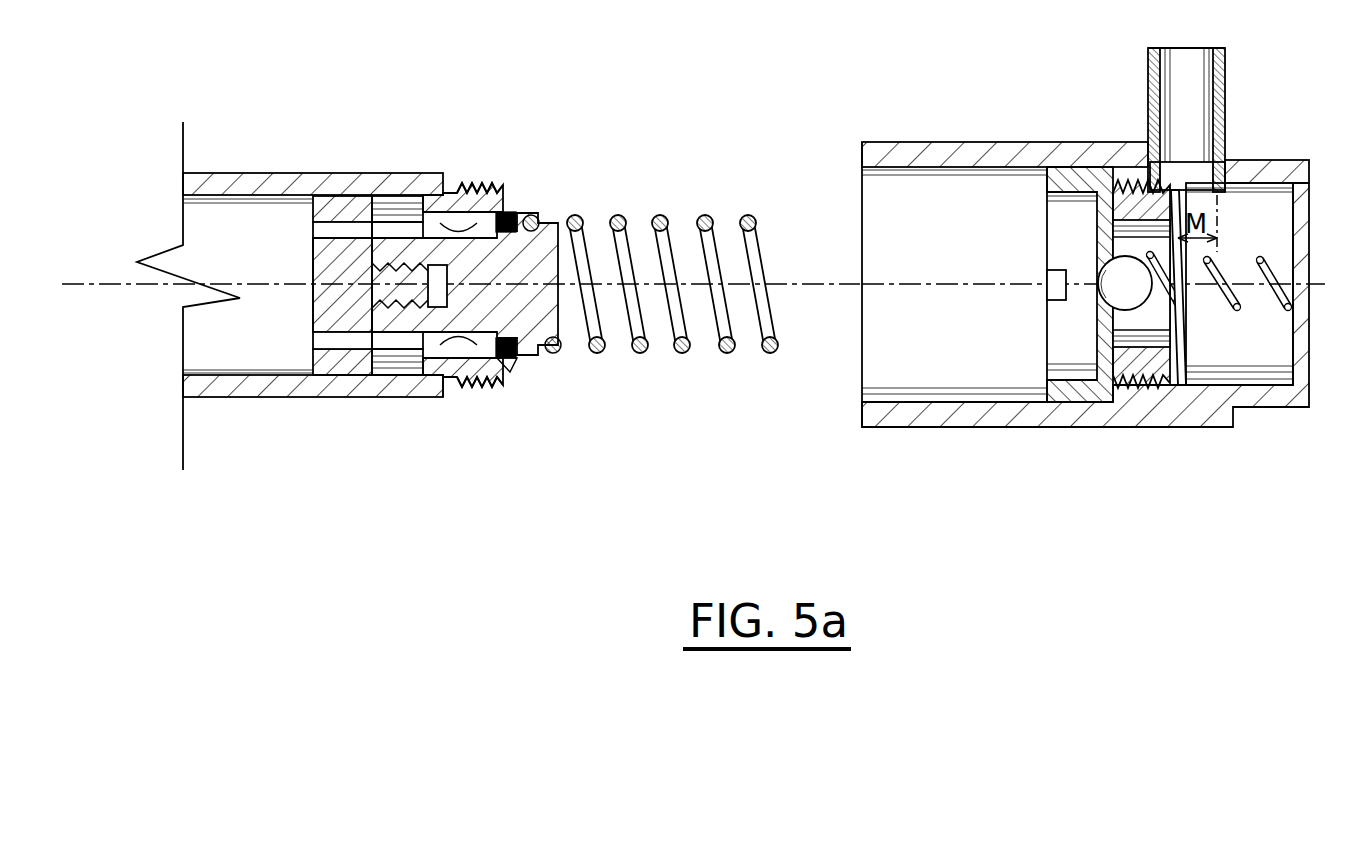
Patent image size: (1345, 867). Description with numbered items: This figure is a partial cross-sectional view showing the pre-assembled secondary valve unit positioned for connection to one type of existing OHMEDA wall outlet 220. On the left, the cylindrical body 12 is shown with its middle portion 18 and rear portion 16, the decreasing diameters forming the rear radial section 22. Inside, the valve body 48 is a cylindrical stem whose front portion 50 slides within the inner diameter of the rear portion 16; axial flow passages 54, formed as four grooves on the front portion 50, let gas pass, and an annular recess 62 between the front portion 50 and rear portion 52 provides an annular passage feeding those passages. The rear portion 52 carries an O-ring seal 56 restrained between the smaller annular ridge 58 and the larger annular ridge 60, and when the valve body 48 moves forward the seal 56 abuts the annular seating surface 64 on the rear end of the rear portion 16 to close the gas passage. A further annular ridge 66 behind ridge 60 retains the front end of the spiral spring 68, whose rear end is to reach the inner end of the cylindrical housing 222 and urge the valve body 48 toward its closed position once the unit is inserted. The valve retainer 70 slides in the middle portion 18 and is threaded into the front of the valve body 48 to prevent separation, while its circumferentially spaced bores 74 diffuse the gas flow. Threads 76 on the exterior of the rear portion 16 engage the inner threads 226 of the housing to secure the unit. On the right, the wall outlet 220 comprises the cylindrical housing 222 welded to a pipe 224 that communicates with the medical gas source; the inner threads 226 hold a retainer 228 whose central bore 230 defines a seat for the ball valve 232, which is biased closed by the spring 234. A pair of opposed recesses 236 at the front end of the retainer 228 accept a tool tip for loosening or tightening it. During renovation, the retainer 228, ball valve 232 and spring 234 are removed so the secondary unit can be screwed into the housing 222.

The cylindrical body 12 is at (211, 168).
The middle portion 18 is at (278, 173).
The front portion 50 is at (390, 247).
The axial flow passages 54 is at (418, 227).
The rear portion 16 is at (455, 192).
The threads 76 is at (478, 190).
The valve body 48 is at (515, 167).
The O-ring seal 56 is at (505, 212).
The spiral spring 68 is at (665, 232).
The valve retainer 70 is at (327, 302).
The bores 74 is at (330, 342).
The rear radial section 22 is at (457, 398).
The annular recess 62 is at (477, 373).
The annular ridge 58 is at (500, 387).
The annular seating surface 64 is at (503, 357).
The annular ridge 60 is at (523, 352).
The rear portion 52 is at (487, 340).
The annular ridge 66 is at (556, 354).
The wall outlet 220 is at (1054, 91).
The cylindrical housing 222 is at (955, 142).
The pipe 224 is at (1225, 85).
The recesses 236 is at (1052, 292).
The central bore 230 is at (1098, 297).
The retainer 228 is at (1053, 427).
The ball valve 232 is at (1130, 300).
The inner threads 226 is at (1197, 377).
The spring 234 is at (1237, 305).